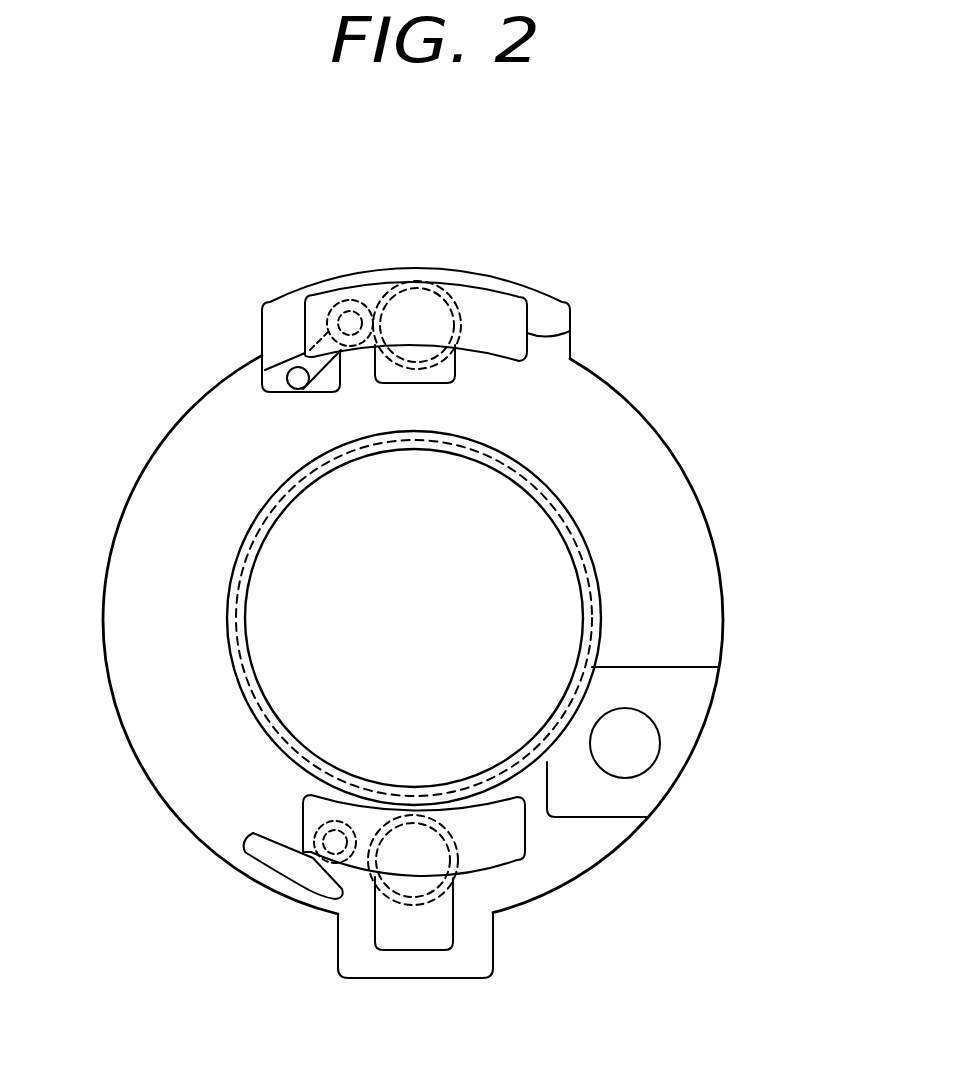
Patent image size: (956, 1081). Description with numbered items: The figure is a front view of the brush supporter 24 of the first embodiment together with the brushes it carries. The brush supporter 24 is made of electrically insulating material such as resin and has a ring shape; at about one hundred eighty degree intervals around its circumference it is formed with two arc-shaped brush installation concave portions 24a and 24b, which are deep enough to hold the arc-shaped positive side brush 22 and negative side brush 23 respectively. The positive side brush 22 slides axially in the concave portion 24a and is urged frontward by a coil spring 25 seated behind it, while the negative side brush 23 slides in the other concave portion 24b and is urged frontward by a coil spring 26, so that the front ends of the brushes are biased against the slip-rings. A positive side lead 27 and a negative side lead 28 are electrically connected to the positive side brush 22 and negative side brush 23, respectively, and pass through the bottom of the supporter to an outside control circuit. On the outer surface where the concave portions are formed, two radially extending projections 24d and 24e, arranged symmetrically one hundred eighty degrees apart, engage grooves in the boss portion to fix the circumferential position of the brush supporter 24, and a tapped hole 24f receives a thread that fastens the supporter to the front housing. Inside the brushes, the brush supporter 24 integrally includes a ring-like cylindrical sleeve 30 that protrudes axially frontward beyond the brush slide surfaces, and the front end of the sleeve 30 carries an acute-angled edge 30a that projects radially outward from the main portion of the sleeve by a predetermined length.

The positive side brush 22 is at (507, 843).
The negative side brush 23 is at (494, 322).
The brush supporter 24 is at (679, 458).
The brush installation concave portion 24a is at (527, 830).
The brush installation concave portion 24b is at (572, 332).
The projection 24d is at (380, 979).
The projection 24e is at (306, 283).
The tapped hole 24f is at (636, 754).
The coil spring 25 is at (463, 858).
The coil spring 26 is at (468, 292).
The positive side lead 27 is at (288, 870).
The negative side lead 28 is at (268, 373).
The cylindrical sleeve 30 is at (270, 530).
The edge 30a is at (593, 553).